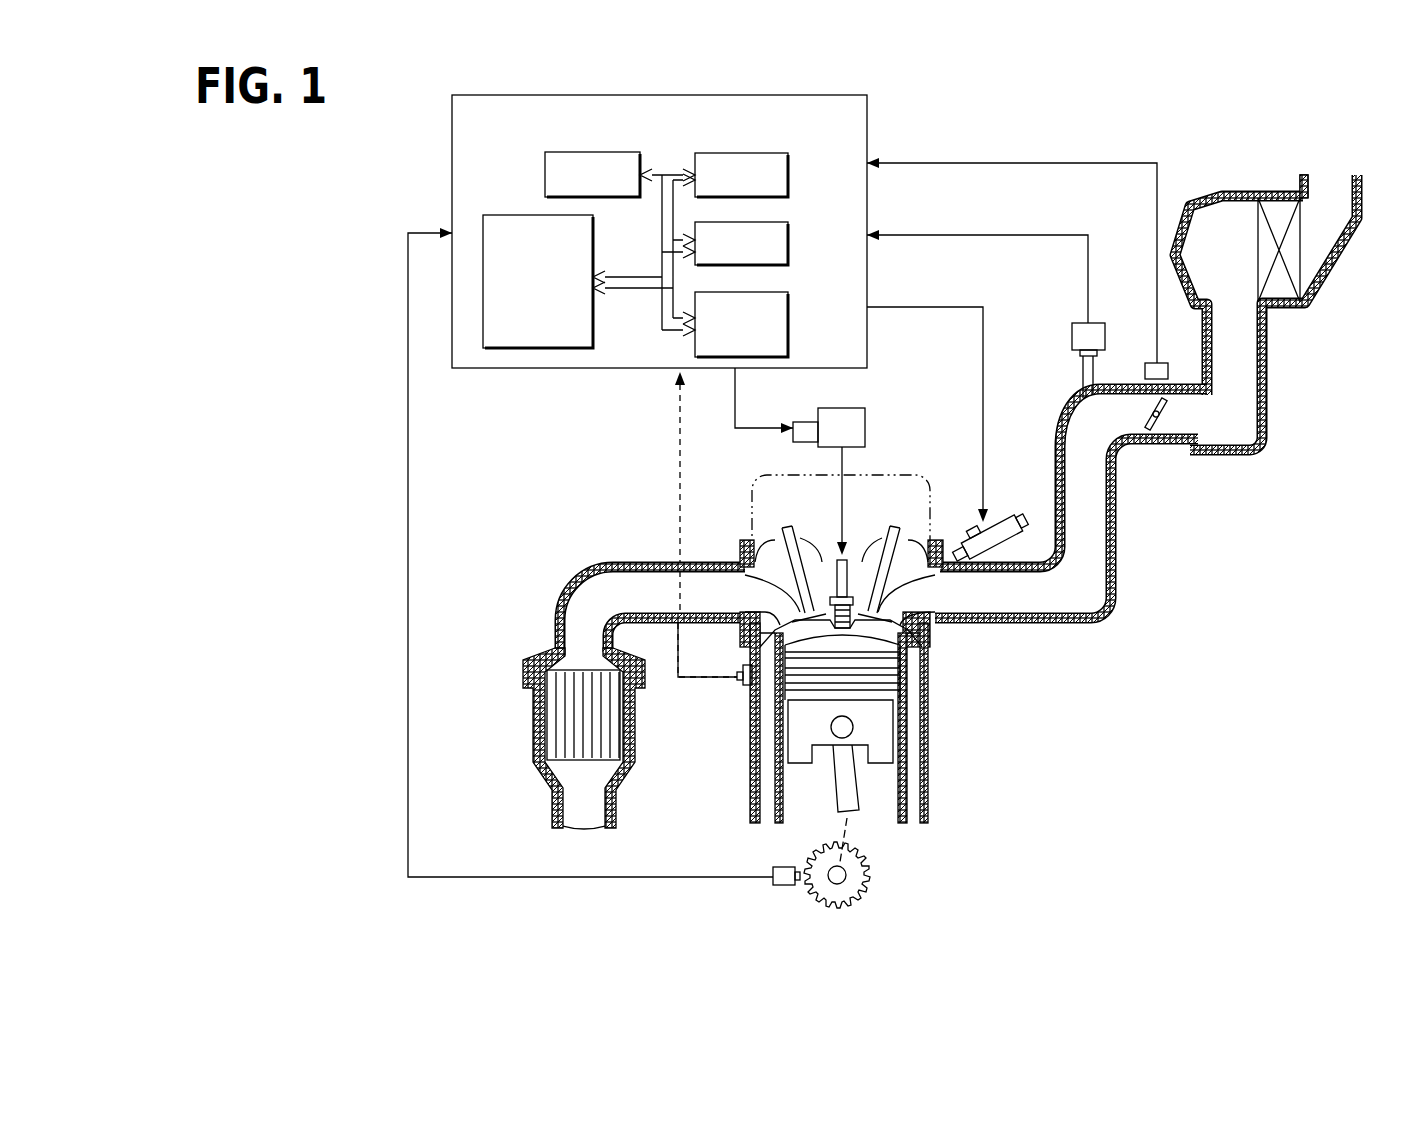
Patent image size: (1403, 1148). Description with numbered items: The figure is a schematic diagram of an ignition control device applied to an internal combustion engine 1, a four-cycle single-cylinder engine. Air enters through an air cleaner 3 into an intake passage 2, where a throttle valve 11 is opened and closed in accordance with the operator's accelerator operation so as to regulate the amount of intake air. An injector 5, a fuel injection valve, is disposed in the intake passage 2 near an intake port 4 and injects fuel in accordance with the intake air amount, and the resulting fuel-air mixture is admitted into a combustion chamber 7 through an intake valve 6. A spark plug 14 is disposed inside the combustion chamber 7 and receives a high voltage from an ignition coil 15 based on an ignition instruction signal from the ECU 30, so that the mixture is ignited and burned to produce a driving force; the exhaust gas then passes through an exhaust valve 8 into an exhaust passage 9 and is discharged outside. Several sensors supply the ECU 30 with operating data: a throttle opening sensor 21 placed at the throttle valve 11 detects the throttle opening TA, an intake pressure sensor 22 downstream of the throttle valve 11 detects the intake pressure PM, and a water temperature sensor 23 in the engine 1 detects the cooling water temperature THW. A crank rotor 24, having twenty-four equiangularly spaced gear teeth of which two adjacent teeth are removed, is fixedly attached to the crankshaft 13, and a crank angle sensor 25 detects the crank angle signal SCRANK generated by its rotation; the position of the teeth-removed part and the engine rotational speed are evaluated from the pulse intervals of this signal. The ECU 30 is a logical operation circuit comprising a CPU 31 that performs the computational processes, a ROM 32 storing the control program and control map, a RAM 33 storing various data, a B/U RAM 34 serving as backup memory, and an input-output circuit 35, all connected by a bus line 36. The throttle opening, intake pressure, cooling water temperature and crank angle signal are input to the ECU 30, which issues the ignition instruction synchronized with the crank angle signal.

The internal combustion engine 1 is at (850, 730).
The intake passage 2 is at (1097, 507).
The air cleaner 3 is at (1300, 225).
The intake port 4 is at (912, 592).
The injector 5 is at (970, 533).
The intake valve 6 is at (925, 627).
The combustion chamber 7 is at (820, 642).
The exhaust valve 8 is at (770, 595).
The exhaust passage 9 is at (643, 583).
The throttle valve 11 is at (1162, 408).
The crankshaft 13 is at (846, 877).
The spark plug 14 is at (865, 618).
The ignition coil 15 is at (865, 418).
The throttle opening sensor 21 is at (1150, 362).
The intake pressure sensor 22 is at (1075, 325).
The water temperature sensor 23 is at (745, 690).
The crank rotor 24 is at (822, 903).
The crank angle sensor 25 is at (772, 872).
The ECU 30 is at (703, 231).
The CPU 31 is at (632, 152).
The ROM 32 is at (790, 162).
The RAM 33 is at (790, 240).
The B/U RAM 34 is at (790, 318).
The input-output circuit 35 is at (595, 247).
The bus line 36 is at (638, 288).